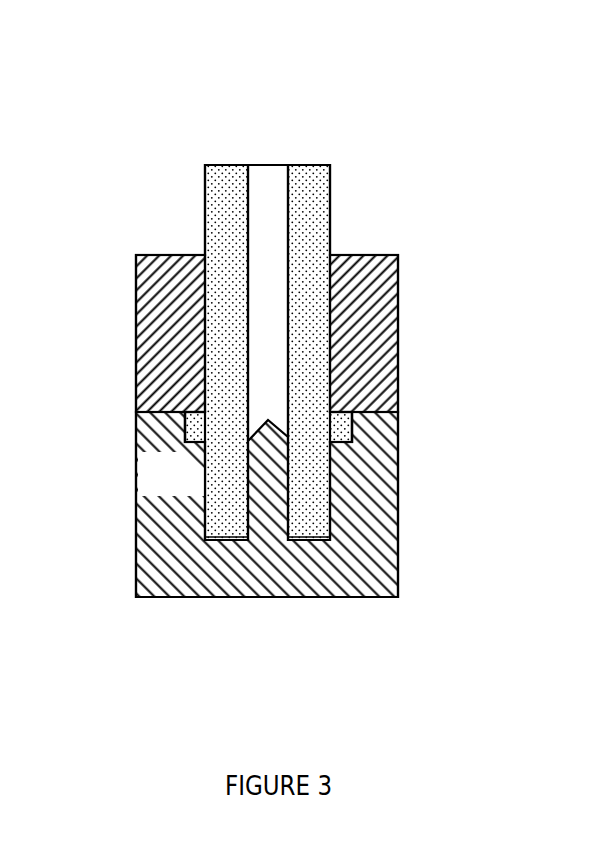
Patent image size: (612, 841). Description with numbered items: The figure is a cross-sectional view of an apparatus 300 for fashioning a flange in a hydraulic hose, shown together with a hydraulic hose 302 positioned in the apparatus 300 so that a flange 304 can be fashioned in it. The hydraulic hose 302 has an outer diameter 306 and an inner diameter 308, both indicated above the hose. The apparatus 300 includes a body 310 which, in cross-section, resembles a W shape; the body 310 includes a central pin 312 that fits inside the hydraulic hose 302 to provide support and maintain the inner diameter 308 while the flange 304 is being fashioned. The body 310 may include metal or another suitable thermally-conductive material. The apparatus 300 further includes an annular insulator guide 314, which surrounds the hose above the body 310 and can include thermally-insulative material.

The apparatus 300 is at (98, 236).
The hydraulic hose 302 is at (331, 211).
The flange 304 is at (197, 423).
The outer diameter 306 is at (327, 72).
The inner diameter 308 is at (288, 141).
The body 310 is at (192, 486).
The central pin 312 is at (286, 429).
The annular insulator guide 314 is at (398, 322).